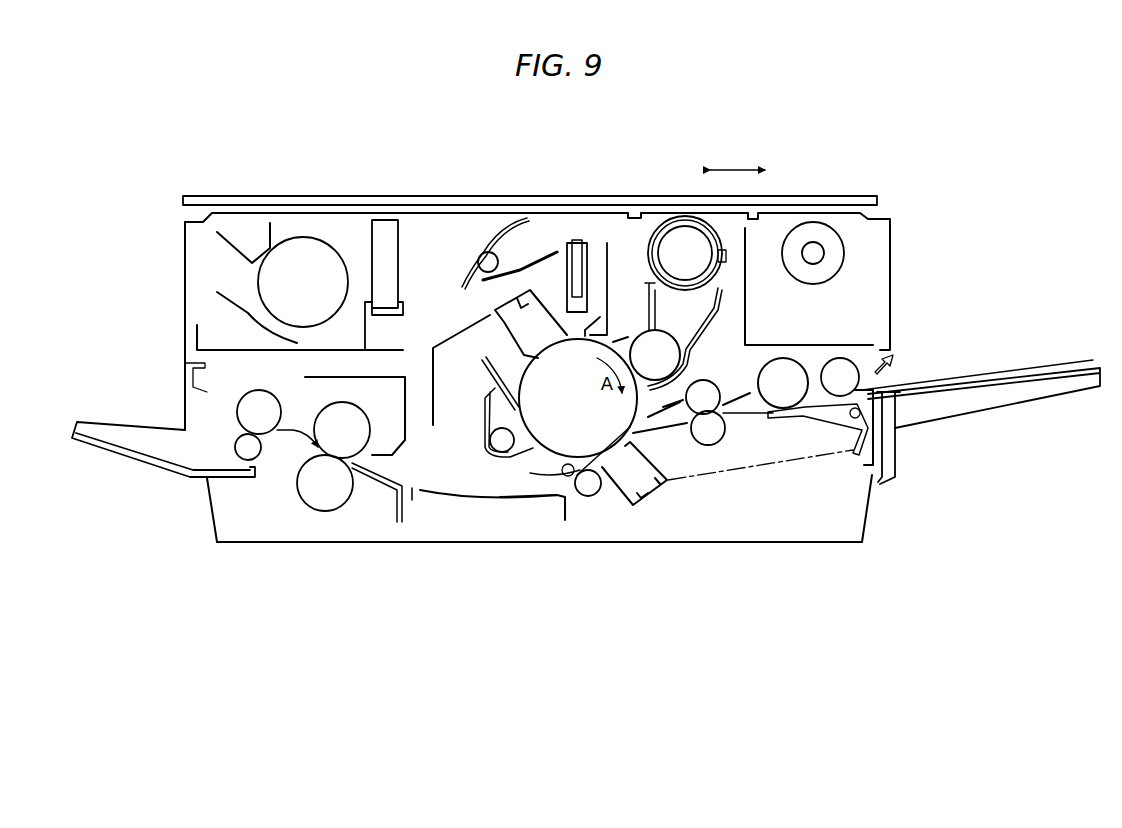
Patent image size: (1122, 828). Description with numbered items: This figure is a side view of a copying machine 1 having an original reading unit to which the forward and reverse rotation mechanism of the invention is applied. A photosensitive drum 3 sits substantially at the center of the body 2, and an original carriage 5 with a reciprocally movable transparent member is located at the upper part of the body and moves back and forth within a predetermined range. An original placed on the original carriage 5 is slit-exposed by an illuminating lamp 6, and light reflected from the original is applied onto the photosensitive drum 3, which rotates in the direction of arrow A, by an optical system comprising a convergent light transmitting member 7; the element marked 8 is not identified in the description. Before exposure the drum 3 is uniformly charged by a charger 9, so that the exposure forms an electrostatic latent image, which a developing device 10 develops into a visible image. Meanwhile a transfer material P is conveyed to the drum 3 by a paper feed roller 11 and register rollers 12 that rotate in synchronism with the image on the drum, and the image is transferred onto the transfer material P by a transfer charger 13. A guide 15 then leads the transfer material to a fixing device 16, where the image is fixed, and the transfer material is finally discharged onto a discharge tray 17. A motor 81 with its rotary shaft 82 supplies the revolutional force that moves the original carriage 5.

The copying machine 1 is at (641, 163).
The body 2 is at (424, 220).
The photosensitive drum 3 is at (620, 423).
The original carriage 5 is at (806, 196).
The illuminating lamp 6 is at (485, 250).
The convergent light transmitting member 7 is at (578, 267).
The light source 8 is at (587, 268).
The charger 9 is at (518, 333).
The developing device 10 is at (648, 343).
The paper feed roller 11 is at (785, 370).
The register rollers 12 is at (706, 393).
The transfer charger 13 is at (625, 480).
The guide 15 is at (462, 493).
The fixing device 16 is at (332, 502).
The discharge tray 17 is at (135, 450).
The motor 81 is at (835, 243).
The rotary shaft 82 is at (817, 255).
The transfer material P is at (1003, 365).